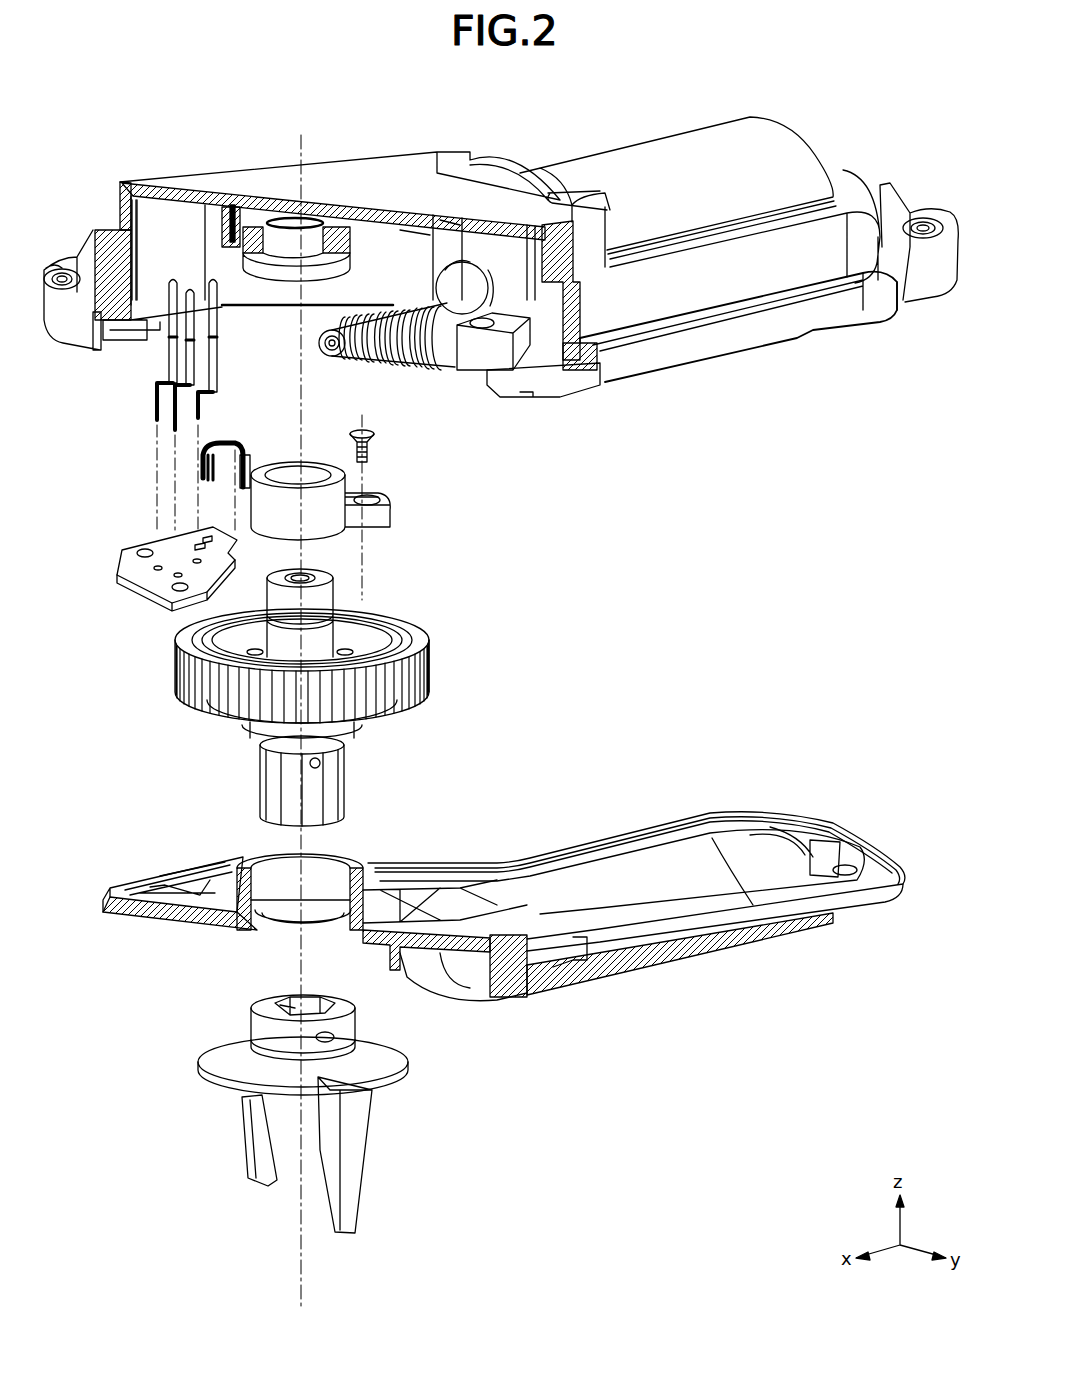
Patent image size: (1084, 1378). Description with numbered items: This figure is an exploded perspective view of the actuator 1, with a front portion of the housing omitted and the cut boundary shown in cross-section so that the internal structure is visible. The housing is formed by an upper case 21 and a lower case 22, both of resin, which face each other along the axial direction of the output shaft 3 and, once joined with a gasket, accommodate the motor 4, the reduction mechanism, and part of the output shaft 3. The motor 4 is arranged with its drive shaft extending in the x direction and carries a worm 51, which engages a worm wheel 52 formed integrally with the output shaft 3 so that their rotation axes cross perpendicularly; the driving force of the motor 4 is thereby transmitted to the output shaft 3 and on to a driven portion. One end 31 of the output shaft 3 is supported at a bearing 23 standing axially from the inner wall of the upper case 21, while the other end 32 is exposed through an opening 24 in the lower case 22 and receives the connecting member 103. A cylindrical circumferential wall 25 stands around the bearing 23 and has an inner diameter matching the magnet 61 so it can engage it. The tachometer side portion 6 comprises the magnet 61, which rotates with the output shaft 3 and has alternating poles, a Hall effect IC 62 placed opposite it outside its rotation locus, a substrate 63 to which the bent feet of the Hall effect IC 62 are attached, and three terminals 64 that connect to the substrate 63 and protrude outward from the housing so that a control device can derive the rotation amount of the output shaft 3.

The actuator 1 is at (93, 160).
The upper case 21 is at (710, 150).
The lower case 22 is at (898, 895).
The bearing 23 is at (288, 216).
The opening 24 is at (325, 923).
The circumferential wall 25 is at (345, 276).
The output shaft 3 is at (345, 590).
The one end 31 is at (323, 575).
The other end 32 is at (344, 793).
The motor 4 is at (570, 393).
The worm 51 is at (405, 355).
The worm wheel 52 is at (428, 680).
The tachometer side portion 6 is at (95, 387).
The magnet 61 is at (327, 467).
The Hall effect IC 62 is at (245, 442).
The substrate 63 is at (143, 590).
The terminal 64 is at (227, 357).
The connecting member 103 is at (373, 1120).